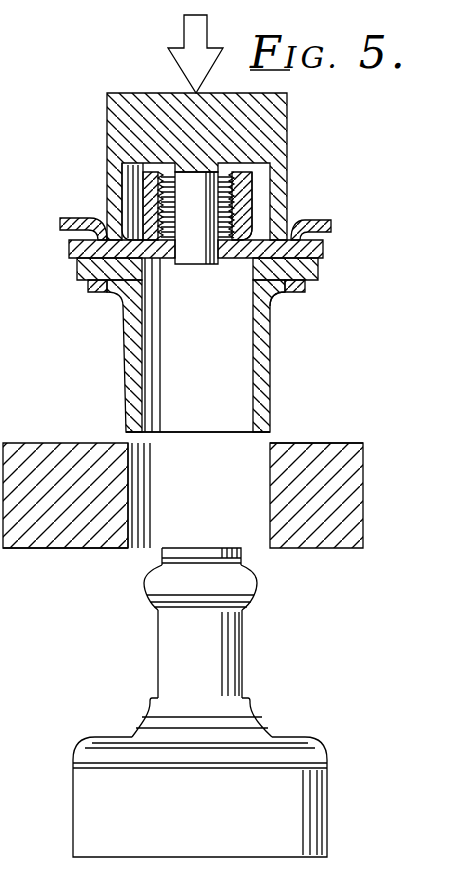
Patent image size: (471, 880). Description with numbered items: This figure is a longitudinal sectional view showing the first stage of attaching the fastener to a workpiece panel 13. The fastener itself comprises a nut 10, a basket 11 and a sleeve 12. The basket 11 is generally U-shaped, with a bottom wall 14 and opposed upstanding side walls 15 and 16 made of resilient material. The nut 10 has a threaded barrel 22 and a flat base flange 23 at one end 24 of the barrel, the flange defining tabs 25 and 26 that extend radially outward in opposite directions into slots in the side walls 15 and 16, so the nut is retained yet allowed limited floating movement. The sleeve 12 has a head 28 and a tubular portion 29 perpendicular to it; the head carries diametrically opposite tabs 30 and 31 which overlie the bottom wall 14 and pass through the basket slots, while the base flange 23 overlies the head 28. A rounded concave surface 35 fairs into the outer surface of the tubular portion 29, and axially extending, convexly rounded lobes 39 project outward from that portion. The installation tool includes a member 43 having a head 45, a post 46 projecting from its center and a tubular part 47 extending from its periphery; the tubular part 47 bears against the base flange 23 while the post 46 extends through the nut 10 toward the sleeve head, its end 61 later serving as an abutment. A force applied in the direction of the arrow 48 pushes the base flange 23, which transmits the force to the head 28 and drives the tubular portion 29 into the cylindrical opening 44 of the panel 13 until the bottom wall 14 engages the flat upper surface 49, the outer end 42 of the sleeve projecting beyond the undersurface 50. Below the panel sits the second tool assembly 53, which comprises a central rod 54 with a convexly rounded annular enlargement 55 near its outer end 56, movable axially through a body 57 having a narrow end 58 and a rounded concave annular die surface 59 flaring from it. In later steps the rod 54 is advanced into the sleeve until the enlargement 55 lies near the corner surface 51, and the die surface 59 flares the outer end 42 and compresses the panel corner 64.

The arrow 48 is at (183, 32).
The member 43 is at (105, 120).
The head 45 is at (257, 123).
The threaded barrel 22 is at (131, 177).
The post 46 is at (166, 187).
The side wall 15 is at (101, 227).
The nut 10 is at (282, 192).
The tubular part 47 is at (252, 190).
The side wall 16 is at (293, 226).
The basket 11 is at (326, 212).
The tab 25 is at (69, 249).
The tab 26 is at (325, 256).
The head 28 is at (77, 274).
The tab 31 is at (319, 276).
The tab 30 is at (88, 288).
The bottom wall 14 is at (306, 292).
The end 61 is at (206, 268).
The end 24 is at (206, 244).
The base flange 23 is at (254, 300).
The concave surface 35 is at (278, 297).
The sleeve 12 is at (118, 347).
The lobes 39 is at (271, 356).
The tubular portion 29 is at (271, 418).
The upper surface 49 is at (58, 443).
The corner surface 51 is at (272, 443).
The outer end 42 is at (190, 437).
The opening 44 is at (270, 470).
The panel 13 is at (366, 495).
The undersurface 50 is at (58, 549).
The corner 64 is at (128, 551).
The outer end 56 is at (205, 548).
The enlargement 55 is at (258, 590).
The rod 54 is at (233, 635).
The narrow end 58 is at (170, 698).
The die surface 59 is at (140, 712).
The assembly 53 is at (64, 753).
The body 57 is at (327, 797).